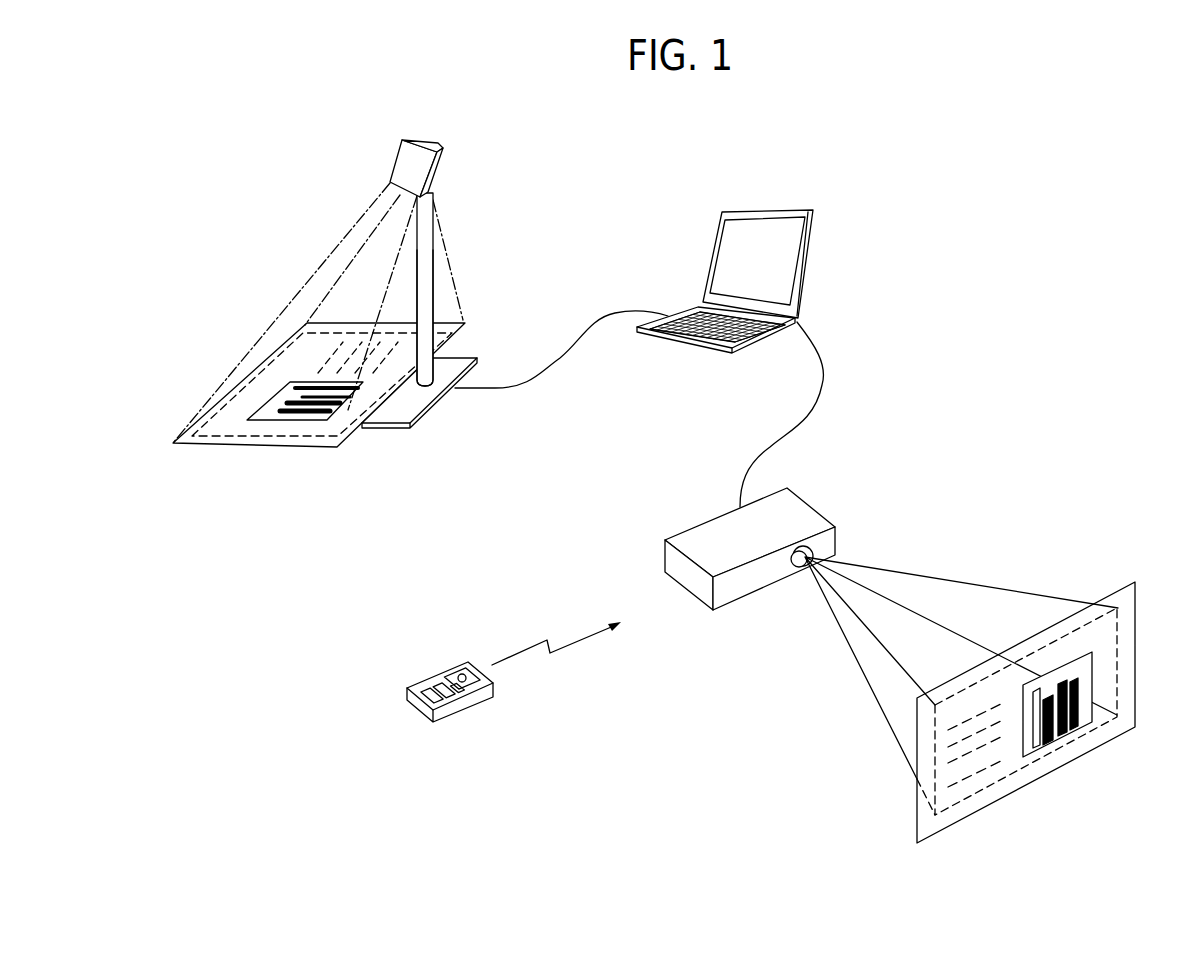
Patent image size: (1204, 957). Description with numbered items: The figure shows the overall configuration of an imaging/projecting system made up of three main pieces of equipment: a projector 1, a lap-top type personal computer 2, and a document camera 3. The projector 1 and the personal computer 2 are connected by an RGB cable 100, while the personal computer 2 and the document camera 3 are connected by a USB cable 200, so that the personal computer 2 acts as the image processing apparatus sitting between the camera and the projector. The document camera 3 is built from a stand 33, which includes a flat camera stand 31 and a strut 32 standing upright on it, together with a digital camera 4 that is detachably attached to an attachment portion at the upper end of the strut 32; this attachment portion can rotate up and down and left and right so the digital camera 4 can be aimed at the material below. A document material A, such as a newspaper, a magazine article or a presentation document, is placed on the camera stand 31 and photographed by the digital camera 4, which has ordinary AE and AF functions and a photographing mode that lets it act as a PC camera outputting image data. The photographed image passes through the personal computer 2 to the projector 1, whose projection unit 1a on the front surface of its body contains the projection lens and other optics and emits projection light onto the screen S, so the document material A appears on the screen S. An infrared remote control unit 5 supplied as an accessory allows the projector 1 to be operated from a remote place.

The projector 1 is at (772, 542).
The projection unit 1a is at (787, 563).
The lap-top type personal computer 2 is at (798, 196).
The document camera 3 is at (358, 291).
The digital camera 4 is at (424, 136).
The infrared remote control unit 5 is at (514, 672).
The camera stand 31 is at (423, 414).
The strut 32 is at (435, 260).
The stand 33 is at (445, 297).
The RGB cable 100 is at (813, 367).
The USB cable 200 is at (527, 388).
The document material A is at (248, 447).
The screen S is at (1118, 590).